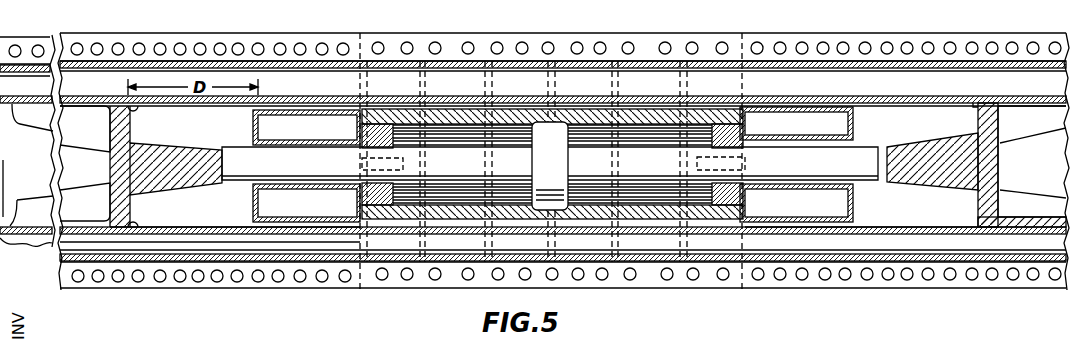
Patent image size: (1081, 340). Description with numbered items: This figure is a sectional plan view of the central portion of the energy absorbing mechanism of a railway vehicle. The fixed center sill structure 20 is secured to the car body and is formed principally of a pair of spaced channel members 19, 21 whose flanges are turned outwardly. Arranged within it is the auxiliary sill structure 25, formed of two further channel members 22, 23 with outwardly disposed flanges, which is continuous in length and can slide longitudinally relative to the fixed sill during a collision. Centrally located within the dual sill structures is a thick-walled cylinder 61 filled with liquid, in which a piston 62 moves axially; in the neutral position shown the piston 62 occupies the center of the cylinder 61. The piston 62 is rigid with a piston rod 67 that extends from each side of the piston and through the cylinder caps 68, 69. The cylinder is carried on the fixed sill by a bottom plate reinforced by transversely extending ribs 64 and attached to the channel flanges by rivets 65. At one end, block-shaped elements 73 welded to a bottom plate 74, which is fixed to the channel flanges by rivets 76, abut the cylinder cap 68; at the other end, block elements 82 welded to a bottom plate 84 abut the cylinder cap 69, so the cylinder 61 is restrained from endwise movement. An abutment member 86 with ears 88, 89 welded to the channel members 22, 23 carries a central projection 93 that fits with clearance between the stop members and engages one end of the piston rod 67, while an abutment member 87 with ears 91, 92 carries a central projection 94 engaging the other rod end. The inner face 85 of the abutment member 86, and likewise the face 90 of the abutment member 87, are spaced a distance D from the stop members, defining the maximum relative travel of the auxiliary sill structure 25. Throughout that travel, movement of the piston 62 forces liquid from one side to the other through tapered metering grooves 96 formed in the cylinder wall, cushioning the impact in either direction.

The channel member 19 is at (190, 264).
The center sill structure 20 is at (107, 282).
The channel member 21 is at (223, 45).
The channel member 22 is at (174, 228).
The channel member 23 is at (196, 104).
The auxiliary sill structure 25 is at (100, 94).
The cylinder 61 is at (647, 111).
The piston 62 is at (543, 163).
The ribs 64 is at (546, 86).
The rivets 65 is at (547, 45).
The piston rod 67 is at (307, 171).
The cylinder cap 68 is at (362, 121).
The cylinder cap 69 is at (741, 134).
The block-shaped elements 73 is at (298, 134).
The bottom plate 74 is at (233, 217).
The rivets 76 is at (300, 44).
The block elements 82 is at (821, 132).
The bottom plate 84 is at (927, 214).
The inner face 85 is at (132, 126).
The abutment member 86 is at (130, 205).
The abutment member 87 is at (988, 199).
The ear 88 is at (94, 214).
The ear 89 is at (97, 136).
The face 90 is at (978, 121).
The ear 91 is at (1030, 200).
The ear 92 is at (1035, 124).
The central projection 93 is at (186, 148).
The central projection 94 is at (916, 152).
The metering grooves 96 is at (583, 189).